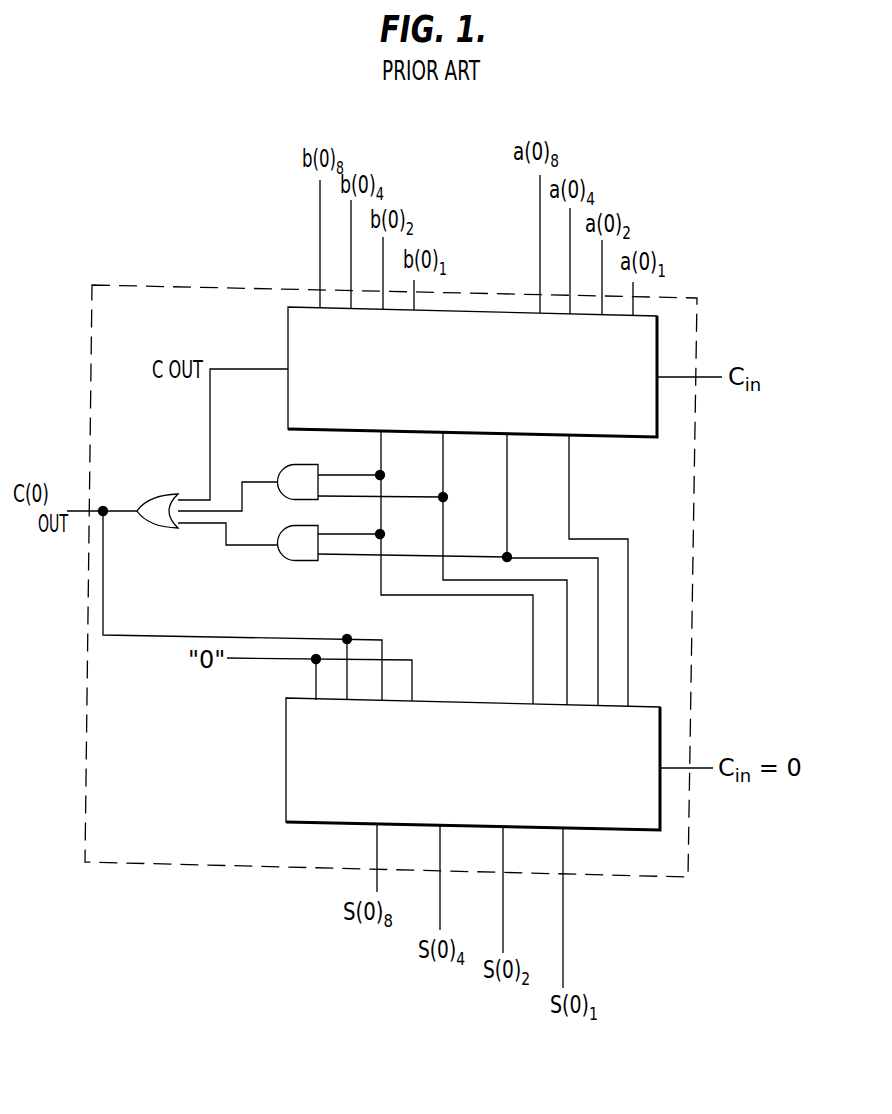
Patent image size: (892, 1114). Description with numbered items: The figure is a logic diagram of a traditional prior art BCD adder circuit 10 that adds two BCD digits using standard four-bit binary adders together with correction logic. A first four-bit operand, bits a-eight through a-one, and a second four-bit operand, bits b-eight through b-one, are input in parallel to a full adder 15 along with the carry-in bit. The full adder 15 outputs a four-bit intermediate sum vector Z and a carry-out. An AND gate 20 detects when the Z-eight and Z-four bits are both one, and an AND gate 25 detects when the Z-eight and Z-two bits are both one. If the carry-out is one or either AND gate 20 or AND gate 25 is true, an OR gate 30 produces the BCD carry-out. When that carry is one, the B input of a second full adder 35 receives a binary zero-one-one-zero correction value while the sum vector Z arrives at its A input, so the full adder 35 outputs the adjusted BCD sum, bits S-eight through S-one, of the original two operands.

The BCD adder circuit 10 is at (737, 131).
The full adder 15 is at (633, 414).
The AND gate 20 is at (304, 478).
The AND gate 25 is at (309, 552).
The OR gate 30 is at (163, 515).
The second full adder 35 is at (642, 808).